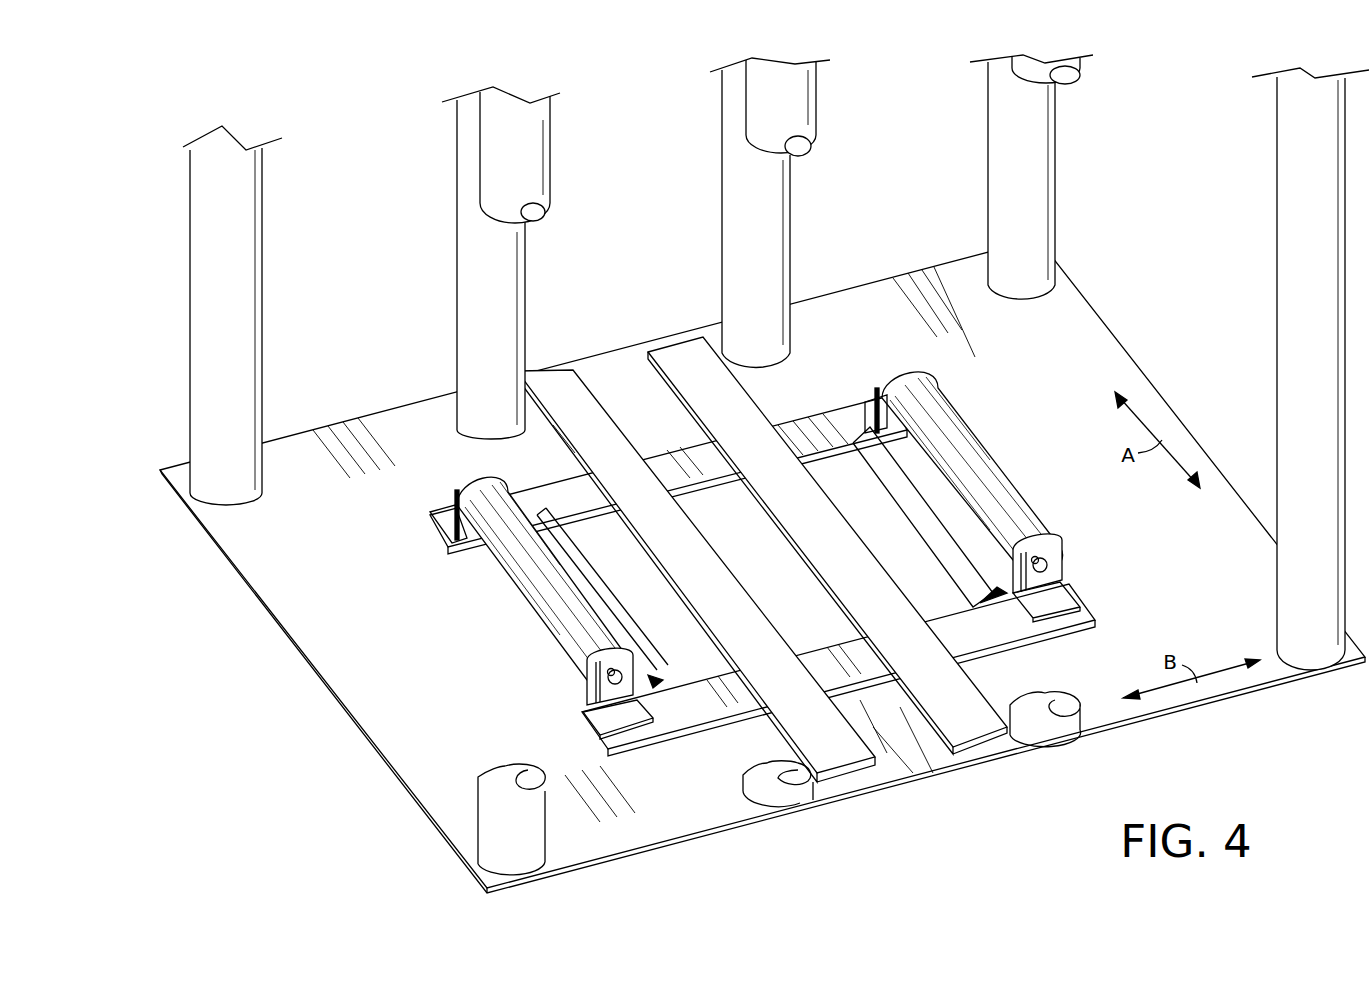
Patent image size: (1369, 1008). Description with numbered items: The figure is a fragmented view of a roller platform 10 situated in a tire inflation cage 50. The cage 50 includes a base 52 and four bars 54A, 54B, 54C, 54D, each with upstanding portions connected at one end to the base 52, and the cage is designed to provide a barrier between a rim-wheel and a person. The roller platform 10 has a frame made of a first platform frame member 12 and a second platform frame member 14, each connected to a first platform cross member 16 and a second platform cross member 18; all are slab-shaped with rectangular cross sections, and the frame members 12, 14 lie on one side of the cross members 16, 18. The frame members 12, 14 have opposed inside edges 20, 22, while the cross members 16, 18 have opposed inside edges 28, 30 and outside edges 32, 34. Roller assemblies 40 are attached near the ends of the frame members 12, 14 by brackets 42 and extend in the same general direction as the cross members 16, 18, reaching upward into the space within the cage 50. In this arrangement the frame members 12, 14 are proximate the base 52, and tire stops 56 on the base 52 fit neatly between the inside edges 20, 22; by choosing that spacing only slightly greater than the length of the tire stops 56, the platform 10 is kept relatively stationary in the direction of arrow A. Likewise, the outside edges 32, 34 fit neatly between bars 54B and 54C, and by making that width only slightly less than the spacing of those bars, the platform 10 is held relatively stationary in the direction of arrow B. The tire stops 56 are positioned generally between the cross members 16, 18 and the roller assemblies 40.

The roller platform 10 is at (688, 790).
The first platform frame member 12 is at (829, 433).
The second platform frame member 14 is at (667, 718).
The first platform cross member 16 is at (670, 561).
The second platform cross member 18 is at (810, 543).
The inside edge of first platform frame member 20 is at (838, 446).
The inside edge of second platform frame member 22 is at (934, 615).
The inside edge of first platform cross member 28 is at (598, 385).
The inside edge of second platform cross member 30 is at (650, 364).
The outside edge of first platform cross member 32 is at (792, 742).
The outside edge of second platform cross member 34 is at (993, 688).
The roller assembly 40 is at (516, 605).
The bracket 42 is at (590, 714).
The tire inflation cage 50 is at (297, 698).
The base 52 is at (333, 611).
The bar 54A is at (215, 285).
The bar 54B is at (465, 288).
The bar 54C is at (728, 268).
The bar 54D is at (997, 162).
The tire stop 56 is at (617, 607).